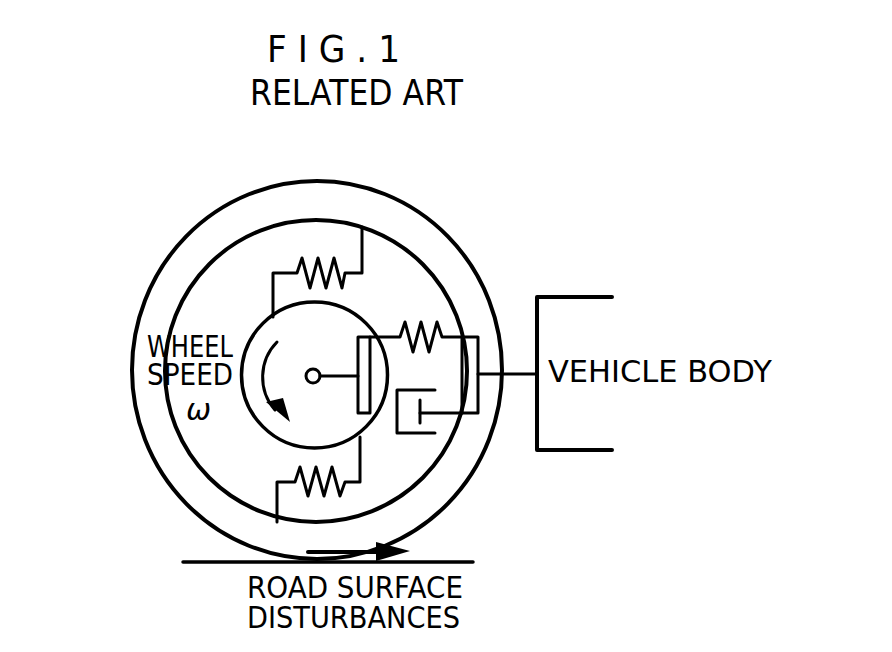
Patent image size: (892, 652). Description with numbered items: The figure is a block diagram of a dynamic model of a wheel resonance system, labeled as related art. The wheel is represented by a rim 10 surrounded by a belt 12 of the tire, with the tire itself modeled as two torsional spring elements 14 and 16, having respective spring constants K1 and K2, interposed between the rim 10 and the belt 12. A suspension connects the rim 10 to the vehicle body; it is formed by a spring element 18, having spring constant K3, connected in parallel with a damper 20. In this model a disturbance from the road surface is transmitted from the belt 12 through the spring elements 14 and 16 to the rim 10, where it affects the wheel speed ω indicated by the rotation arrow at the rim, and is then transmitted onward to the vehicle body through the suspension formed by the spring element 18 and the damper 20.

The rim 10 is at (262, 338).
The belt 12 is at (178, 476).
The torsional spring element 14 is at (297, 262).
The torsional spring element 16 is at (303, 497).
The spring element 18 is at (409, 330).
The damper 20 is at (423, 433).